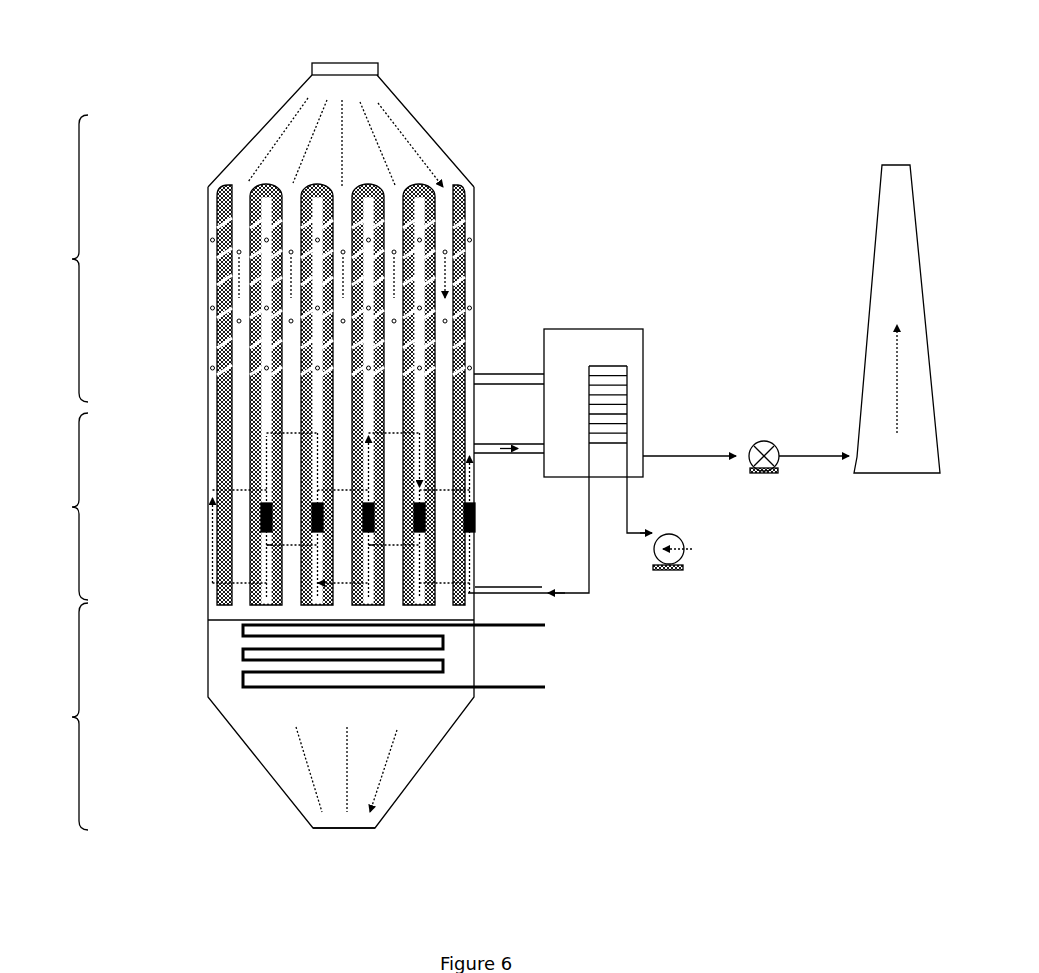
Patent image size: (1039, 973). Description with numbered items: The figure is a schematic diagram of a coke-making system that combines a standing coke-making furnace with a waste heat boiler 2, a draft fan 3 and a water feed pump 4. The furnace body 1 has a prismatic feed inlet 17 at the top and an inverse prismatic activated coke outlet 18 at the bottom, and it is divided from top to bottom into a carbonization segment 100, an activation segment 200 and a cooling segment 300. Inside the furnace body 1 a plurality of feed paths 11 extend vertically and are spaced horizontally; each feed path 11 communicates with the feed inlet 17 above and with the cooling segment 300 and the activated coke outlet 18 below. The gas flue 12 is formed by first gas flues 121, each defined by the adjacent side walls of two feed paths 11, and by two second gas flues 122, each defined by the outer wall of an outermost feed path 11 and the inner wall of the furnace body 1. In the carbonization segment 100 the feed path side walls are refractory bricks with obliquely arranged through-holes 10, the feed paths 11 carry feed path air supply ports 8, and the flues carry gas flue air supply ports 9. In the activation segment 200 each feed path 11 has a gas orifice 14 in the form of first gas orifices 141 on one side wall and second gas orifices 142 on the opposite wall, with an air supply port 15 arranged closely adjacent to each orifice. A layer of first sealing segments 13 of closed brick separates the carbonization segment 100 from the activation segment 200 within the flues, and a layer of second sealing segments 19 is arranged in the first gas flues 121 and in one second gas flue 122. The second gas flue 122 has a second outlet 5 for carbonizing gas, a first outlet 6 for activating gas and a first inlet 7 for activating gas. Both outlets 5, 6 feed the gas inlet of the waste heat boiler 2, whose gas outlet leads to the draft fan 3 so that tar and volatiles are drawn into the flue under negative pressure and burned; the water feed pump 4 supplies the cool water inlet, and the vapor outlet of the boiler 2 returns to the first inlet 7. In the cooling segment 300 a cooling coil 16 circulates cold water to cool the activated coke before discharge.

The furnace body 1 is at (433, 137).
The waste heat boiler 2 is at (575, 329).
The draft fan 3 is at (764, 441).
The water feed pump 4 is at (687, 563).
The second outlet 5 is at (478, 374).
The first outlet 6 is at (475, 453).
The first inlet 7 is at (480, 595).
The feed path air supply port 8 is at (214, 205).
The gas flue air supply port 9 is at (221, 237).
The through-hole 10 is at (226, 268).
The feed path 11 is at (226, 300).
The gas flue 12 is at (283, 318).
The first gas flue 121 is at (245, 398).
The second gas flue 122 is at (220, 347).
The first sealing segment 13 is at (252, 415).
The gas orifice 14 is at (261, 498).
The first gas orifice 141 is at (250, 538).
The second gas orifice 142 is at (250, 490).
The air supply port 15 is at (213, 510).
The cooling coil 16 is at (247, 680).
The feed inlet 17 is at (337, 63).
The activated coke outlet 18 is at (372, 820).
The second sealing segment 19 is at (475, 528).
The carbonization segment 100 is at (72, 259).
The activation segment 200 is at (72, 507).
The cooling segment 300 is at (72, 717).